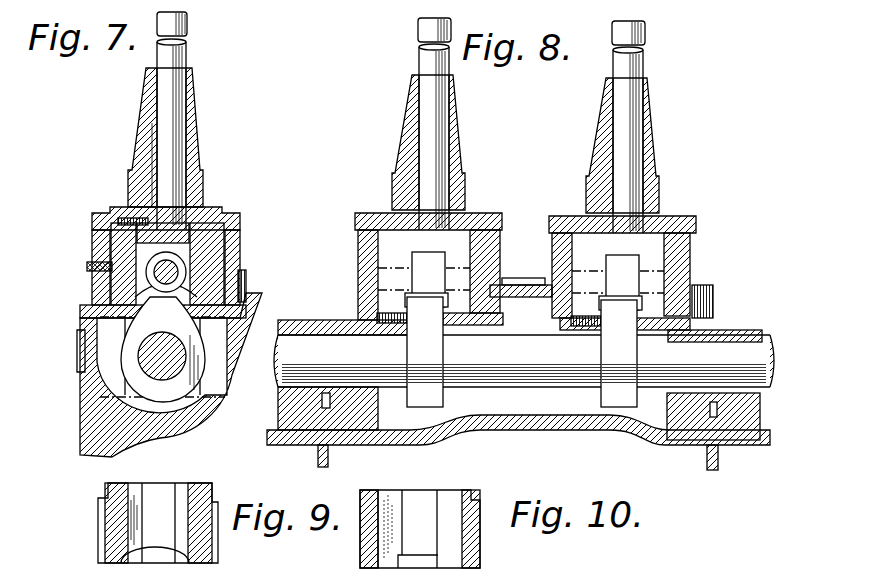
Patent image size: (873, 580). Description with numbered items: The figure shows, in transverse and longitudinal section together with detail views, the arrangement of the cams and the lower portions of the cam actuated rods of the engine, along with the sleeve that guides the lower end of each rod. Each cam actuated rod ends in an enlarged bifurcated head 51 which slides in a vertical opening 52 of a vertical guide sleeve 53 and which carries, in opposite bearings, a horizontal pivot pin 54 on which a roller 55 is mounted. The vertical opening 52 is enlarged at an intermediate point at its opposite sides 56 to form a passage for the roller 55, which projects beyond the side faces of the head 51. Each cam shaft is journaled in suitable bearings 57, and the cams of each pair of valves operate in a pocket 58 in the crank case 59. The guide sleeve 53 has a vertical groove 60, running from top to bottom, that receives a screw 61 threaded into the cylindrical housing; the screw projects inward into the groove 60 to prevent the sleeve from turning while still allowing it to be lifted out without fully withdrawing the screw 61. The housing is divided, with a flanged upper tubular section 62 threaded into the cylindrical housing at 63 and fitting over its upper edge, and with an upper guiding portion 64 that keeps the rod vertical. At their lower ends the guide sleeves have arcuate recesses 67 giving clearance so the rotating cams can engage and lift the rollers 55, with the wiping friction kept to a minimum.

In FIG. 8, the enlarged bifurcated head 51 is at (426, 318).
In FIG. 9, the vertical opening 52 is at (155, 523).
In FIG. 9, the vertical guide sleeve 53 is at (116, 525).
In FIG. 7, the horizontal pivot pin 54 is at (176, 272).
In FIG. 7, the roller 55 is at (150, 270).
In FIG. 10, the enlarged opposite sides 56 is at (418, 529).
In FIG. 8, the bearings 57 is at (728, 343).
In FIG. 8, the pocket 58 is at (518, 419).
In FIG. 8, the crank case 59 is at (668, 440).
In FIG. 7, the vertical groove 60 is at (109, 246).
In FIG. 7, the screw 61 is at (90, 267).
In FIG. 7, the upper tubular section 62 is at (196, 150).
In FIG. 7, the threaded connection 63 is at (236, 232).
In FIG. 7, the upper guiding portion 64 is at (176, 95).
In FIG. 7, the arcuate recesses 67 is at (115, 320).